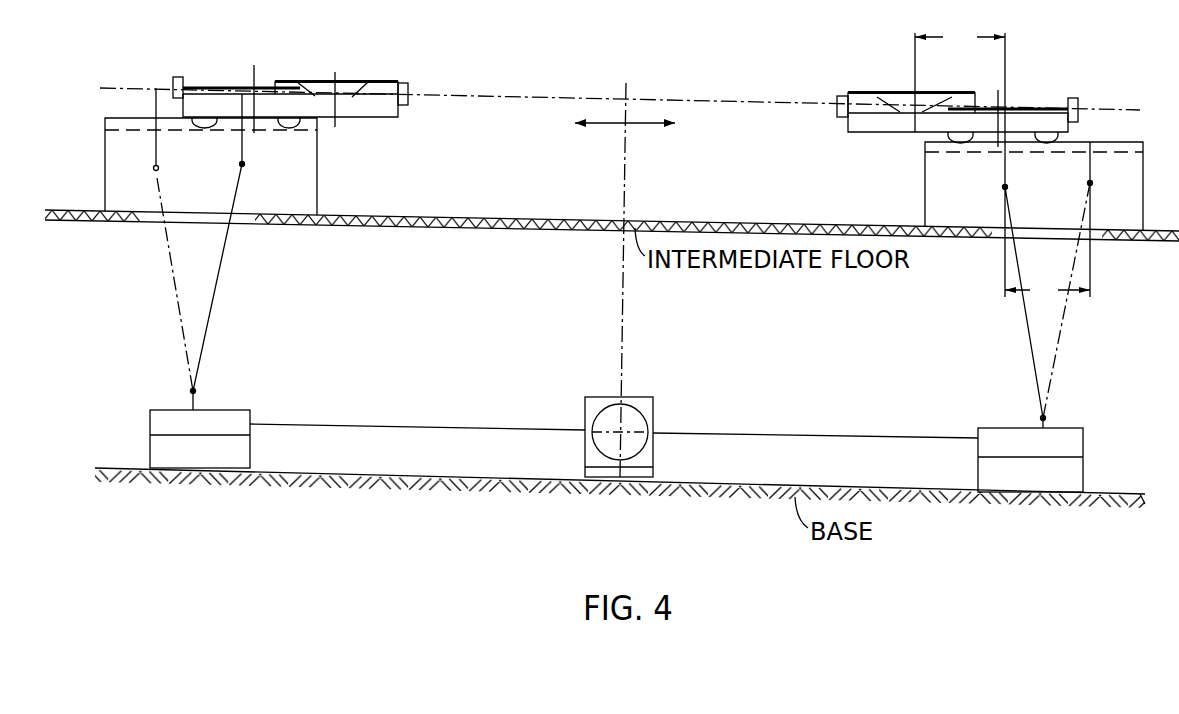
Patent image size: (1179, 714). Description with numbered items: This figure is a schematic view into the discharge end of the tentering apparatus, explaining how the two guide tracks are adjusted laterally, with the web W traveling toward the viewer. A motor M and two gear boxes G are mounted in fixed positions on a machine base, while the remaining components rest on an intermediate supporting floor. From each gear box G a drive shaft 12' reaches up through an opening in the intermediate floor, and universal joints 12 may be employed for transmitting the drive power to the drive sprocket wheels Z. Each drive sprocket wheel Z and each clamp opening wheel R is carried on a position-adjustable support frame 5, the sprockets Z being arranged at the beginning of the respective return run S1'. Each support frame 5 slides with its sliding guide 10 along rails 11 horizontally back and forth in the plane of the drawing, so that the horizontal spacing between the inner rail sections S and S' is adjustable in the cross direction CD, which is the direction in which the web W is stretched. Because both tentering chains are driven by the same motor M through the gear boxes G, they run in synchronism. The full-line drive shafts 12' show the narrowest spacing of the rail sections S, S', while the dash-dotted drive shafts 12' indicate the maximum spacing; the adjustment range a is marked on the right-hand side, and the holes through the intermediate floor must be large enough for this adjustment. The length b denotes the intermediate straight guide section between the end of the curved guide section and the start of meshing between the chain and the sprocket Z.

The support frame 5 is at (360, 112).
The sliding guide 10 is at (293, 133).
The rail 11 is at (130, 128).
The universal joint 12 is at (618, 230).
The drive shaft 12' is at (623, 253).
The gear box G is at (167, 420).
The motor M is at (645, 467).
The inner rail section S is at (831, 90).
The inner rail section S' is at (757, 87).
The return run S1' is at (181, 72).
The drive sprocket wheel Z is at (210, 83).
The clamp opening wheel R is at (354, 90).
The web W is at (567, 88).
The cross direction CD is at (637, 125).
The adjustment range a is at (1047, 290).
The length b is at (960, 37).